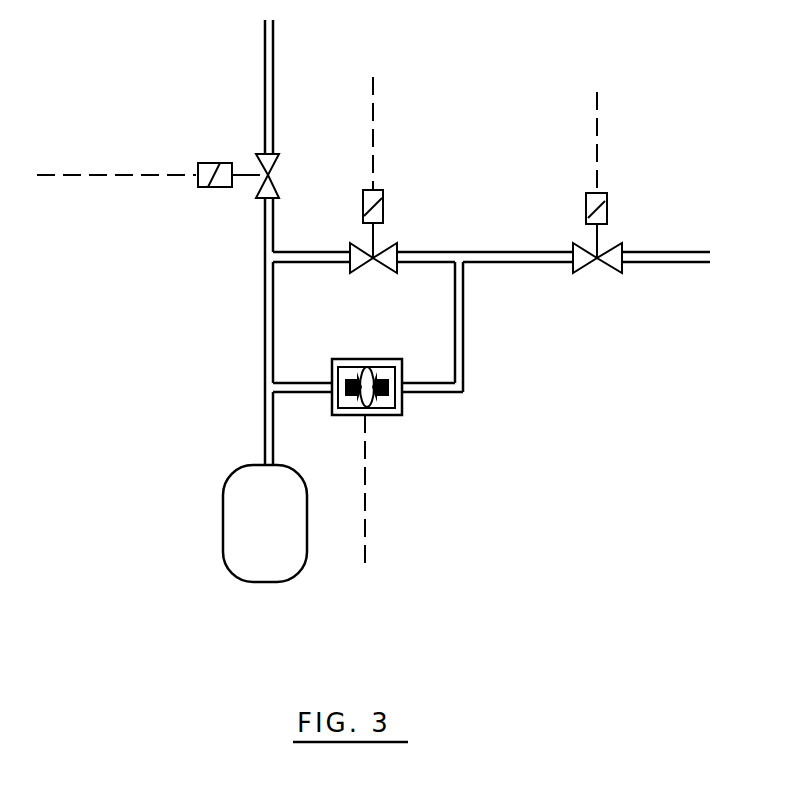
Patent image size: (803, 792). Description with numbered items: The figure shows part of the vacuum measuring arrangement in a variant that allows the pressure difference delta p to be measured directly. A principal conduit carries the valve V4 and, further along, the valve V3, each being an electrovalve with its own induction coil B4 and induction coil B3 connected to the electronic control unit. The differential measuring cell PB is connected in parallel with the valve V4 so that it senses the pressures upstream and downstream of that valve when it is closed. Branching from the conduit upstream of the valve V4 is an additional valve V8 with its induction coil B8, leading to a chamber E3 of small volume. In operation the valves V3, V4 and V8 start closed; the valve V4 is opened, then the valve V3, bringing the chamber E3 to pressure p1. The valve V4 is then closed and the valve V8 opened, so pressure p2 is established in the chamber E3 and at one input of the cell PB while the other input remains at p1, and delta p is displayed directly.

The induction coil B8 is at (197, 172).
The valve V8 is at (283, 177).
The induction coil B4 is at (385, 193).
The valve V4 is at (373, 274).
The induction coil B3 is at (607, 202).
The valve V3 is at (598, 276).
The differential measuring cell PB is at (378, 415).
The chamber E3 is at (243, 502).